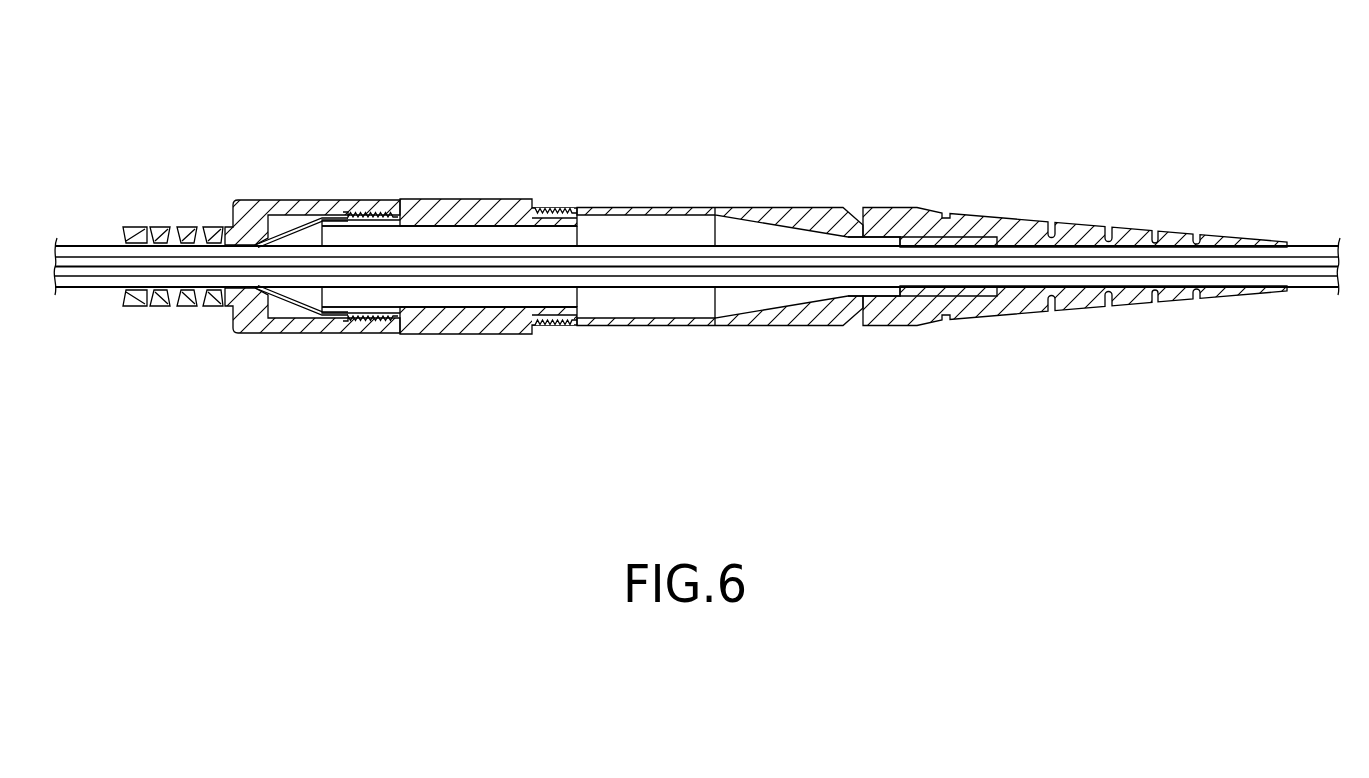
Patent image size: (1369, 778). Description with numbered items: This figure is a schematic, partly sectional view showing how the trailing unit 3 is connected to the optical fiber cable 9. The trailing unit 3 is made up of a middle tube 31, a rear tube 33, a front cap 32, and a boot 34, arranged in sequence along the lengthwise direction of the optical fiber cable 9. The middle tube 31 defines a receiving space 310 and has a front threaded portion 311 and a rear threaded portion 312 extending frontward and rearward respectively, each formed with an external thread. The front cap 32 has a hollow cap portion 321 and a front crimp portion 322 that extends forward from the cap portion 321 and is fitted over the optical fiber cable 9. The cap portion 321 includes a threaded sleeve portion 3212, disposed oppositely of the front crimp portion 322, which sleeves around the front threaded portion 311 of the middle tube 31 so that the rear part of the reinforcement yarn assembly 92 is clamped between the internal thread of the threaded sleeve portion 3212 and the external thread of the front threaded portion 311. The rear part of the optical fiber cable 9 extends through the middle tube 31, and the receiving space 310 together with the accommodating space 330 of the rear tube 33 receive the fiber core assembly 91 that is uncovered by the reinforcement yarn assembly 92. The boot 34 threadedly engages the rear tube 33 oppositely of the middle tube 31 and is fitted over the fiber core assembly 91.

The trailing unit 3 is at (702, 135).
The optical fiber cable 9 is at (85, 325).
The fiber core assembly 91 is at (93, 280).
The reinforcement yarn assembly 92 is at (90, 243).
The middle tube 31 is at (482, 170).
The receiving space 310 is at (472, 292).
The front threaded portion 311 is at (367, 323).
The rear threaded portion 312 is at (558, 208).
The front cap 32 is at (312, 165).
The cap portion 321 is at (268, 200).
The front crimp portion 322 is at (160, 227).
The threaded sleeve portion 3212 is at (385, 232).
The rear tube 33 is at (788, 207).
The accommodating space 330 is at (680, 302).
The boot 34 is at (1017, 218).